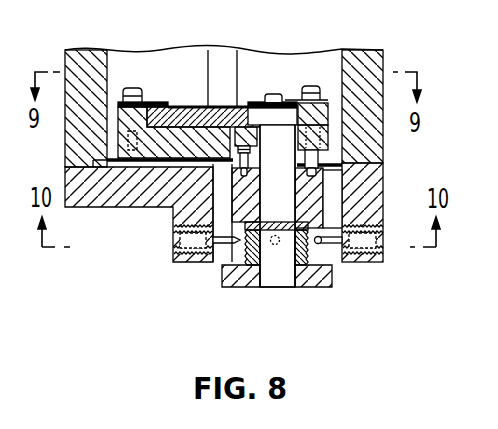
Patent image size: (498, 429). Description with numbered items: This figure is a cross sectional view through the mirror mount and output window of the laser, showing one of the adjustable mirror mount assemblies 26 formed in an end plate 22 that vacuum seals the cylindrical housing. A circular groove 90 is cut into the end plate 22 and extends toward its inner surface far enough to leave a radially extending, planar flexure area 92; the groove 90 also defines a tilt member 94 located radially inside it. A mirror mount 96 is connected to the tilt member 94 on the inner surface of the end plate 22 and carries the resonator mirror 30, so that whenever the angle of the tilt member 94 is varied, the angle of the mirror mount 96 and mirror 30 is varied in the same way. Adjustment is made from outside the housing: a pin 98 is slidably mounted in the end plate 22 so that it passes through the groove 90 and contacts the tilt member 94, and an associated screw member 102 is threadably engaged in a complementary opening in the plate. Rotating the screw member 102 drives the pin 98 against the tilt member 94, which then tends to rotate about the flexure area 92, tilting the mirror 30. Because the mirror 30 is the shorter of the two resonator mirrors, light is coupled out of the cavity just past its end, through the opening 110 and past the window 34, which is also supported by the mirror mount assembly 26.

The end plate 22 is at (107, 208).
The mirror mount assembly 26 is at (335, 295).
The resonator mirror 30 is at (184, 107).
The window 34 is at (263, 288).
The circular groove 90 is at (345, 200).
The flexure area 92 is at (331, 170).
The tilt member 94 is at (256, 186).
The mirror mount 96 is at (214, 105).
The pin 98 is at (329, 246).
The screw member 102 is at (381, 249).
The opening 110 is at (260, 189).